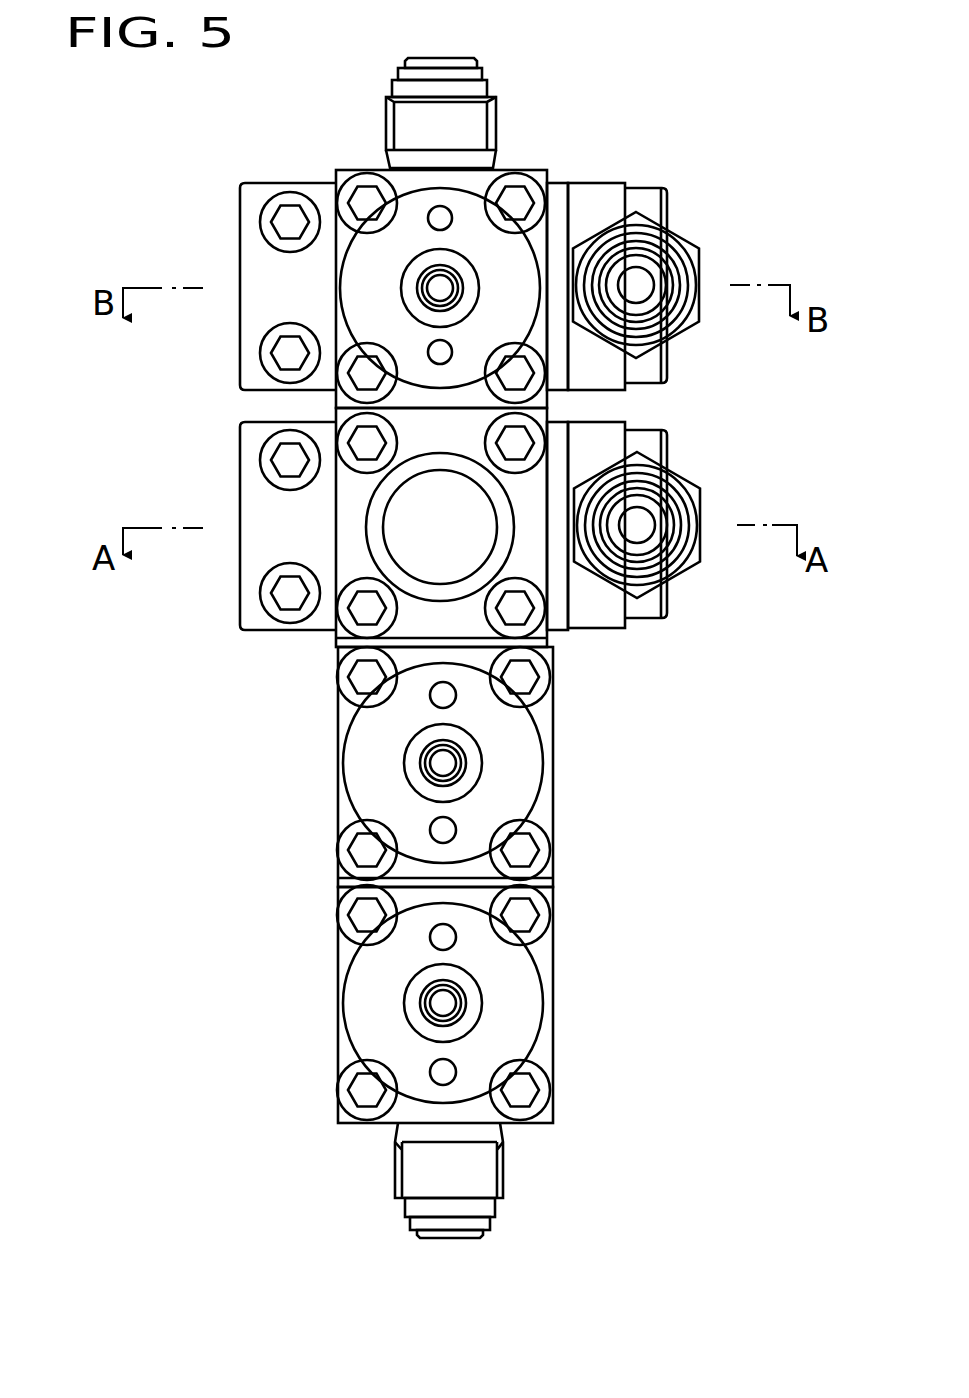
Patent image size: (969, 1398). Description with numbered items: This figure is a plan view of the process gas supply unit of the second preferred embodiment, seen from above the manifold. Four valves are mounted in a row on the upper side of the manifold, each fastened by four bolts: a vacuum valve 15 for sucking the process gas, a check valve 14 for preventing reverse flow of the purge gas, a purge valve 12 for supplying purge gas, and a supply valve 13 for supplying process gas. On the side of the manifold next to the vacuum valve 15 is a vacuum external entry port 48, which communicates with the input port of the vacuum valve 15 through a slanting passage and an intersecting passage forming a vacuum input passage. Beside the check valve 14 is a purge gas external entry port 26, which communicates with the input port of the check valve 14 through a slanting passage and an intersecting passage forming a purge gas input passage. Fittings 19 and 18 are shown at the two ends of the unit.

The purge valve 12 is at (520, 781).
The supply valve 13 is at (530, 1021).
The check valve 14 is at (400, 548).
The vacuum valve 15 is at (470, 210).
The outlet port fitting 18 is at (470, 1238).
The inlet port fitting 19 is at (460, 58).
The purge gas external entry port 26 is at (645, 532).
The vacuum external entry port 48 is at (641, 278).